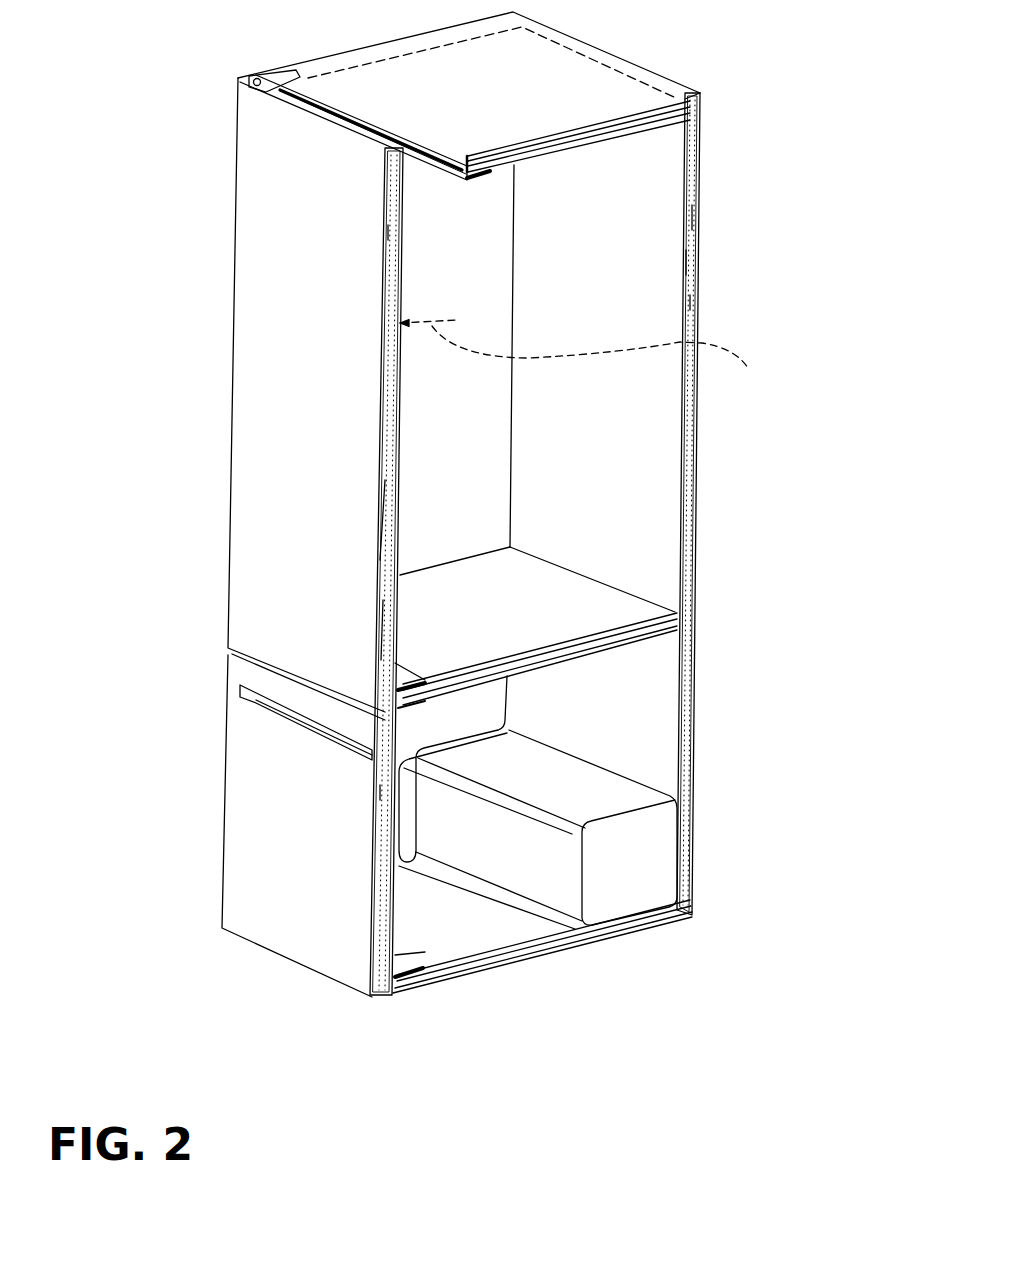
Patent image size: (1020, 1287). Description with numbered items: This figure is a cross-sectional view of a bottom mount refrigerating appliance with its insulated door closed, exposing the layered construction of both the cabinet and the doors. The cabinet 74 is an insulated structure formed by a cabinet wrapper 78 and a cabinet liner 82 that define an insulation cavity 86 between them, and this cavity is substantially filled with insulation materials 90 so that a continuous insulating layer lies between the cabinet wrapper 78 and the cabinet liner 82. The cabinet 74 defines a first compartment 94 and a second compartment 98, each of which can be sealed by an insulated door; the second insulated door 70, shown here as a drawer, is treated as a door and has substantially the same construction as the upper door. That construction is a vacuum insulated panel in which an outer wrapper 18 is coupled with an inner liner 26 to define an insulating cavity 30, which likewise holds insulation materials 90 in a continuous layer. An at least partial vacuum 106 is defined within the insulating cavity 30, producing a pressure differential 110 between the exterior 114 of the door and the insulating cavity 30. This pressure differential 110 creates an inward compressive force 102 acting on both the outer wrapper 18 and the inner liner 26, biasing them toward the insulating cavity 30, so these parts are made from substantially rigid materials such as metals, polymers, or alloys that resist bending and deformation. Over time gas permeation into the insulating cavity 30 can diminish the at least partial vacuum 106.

The outer wrapper 18 is at (257, 553).
The inner liner 26 is at (393, 440).
The insulating cavity 30 is at (383, 635).
The second insulated door 70 is at (227, 732).
The cabinet 74 is at (707, 107).
The cabinet wrapper 78 is at (698, 192).
The cabinet liner 82 is at (693, 220).
The insulation cavity 86 is at (698, 263).
The insulation materials 90 is at (383, 233).
The first compartment 94 is at (585, 528).
The second compartment 98 is at (615, 745).
The inward compressive force 102 is at (258, 122).
The at least partial vacuum 106 is at (386, 525).
The pressure differential 110 is at (380, 341).
The exterior 114 is at (238, 172).